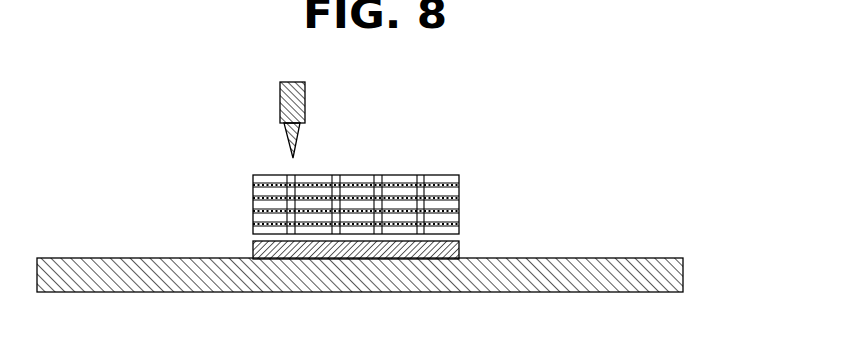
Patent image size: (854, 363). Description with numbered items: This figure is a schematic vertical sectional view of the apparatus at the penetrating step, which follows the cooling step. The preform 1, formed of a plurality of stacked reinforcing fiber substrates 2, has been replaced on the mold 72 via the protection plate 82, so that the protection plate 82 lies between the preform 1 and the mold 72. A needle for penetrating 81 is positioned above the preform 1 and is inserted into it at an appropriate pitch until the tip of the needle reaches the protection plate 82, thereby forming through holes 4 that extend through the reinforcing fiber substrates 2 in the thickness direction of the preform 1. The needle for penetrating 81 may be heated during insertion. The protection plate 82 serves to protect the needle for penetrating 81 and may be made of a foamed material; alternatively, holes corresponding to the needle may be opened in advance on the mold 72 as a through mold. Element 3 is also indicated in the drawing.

The preform 1 is at (400, 175).
The reinforcing fiber substrates 2 is at (445, 175).
The dielectric / ceramic layer 3 is at (465, 178).
The through holes 4 is at (293, 175).
The mold 72 is at (393, 292).
The needle for penetrating 81 is at (305, 86).
The protection plate 82 is at (458, 243).